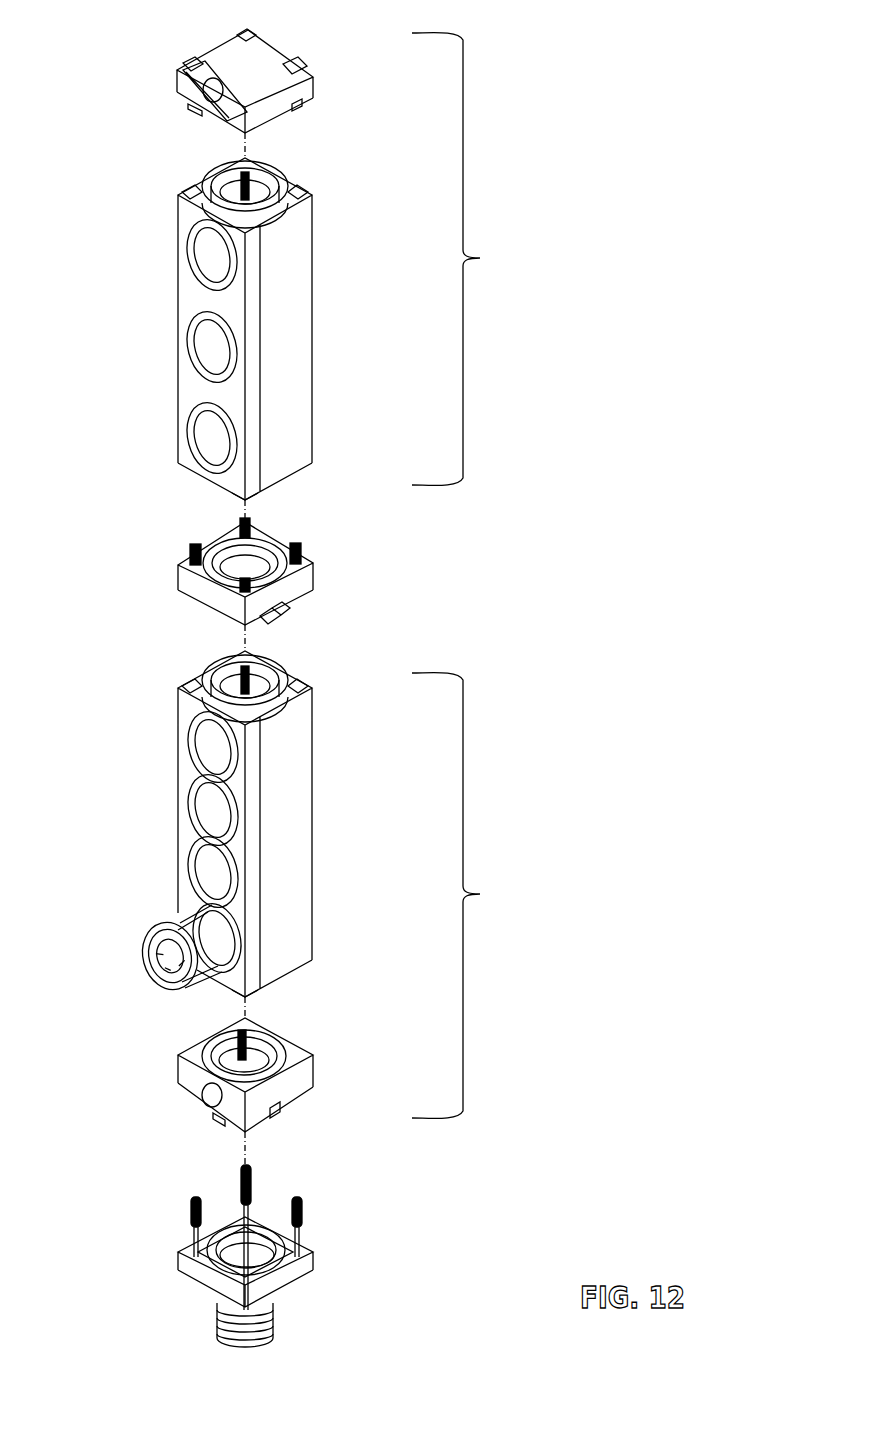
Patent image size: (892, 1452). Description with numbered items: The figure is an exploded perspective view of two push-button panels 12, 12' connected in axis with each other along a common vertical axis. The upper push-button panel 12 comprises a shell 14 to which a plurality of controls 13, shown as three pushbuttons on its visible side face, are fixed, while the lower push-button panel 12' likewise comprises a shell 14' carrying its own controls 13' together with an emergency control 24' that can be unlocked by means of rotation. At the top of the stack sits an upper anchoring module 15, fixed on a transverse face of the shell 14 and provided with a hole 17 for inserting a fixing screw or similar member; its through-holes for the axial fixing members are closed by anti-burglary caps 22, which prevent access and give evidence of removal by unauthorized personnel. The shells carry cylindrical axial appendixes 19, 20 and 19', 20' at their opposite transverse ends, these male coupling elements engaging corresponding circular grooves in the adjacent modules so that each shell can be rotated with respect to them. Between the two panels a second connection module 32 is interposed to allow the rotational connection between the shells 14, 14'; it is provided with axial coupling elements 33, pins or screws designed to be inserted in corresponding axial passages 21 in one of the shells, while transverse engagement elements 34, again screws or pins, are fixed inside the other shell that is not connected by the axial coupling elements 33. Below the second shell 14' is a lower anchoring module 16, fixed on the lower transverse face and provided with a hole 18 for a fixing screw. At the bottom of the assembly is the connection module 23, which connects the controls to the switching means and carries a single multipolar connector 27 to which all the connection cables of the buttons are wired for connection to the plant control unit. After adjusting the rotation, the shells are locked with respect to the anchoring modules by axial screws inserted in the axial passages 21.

The push-button panel 12 is at (483, 259).
The push-button panel 12' is at (489, 896).
The controls 13 is at (171, 346).
The controls 13' is at (167, 809).
The shell 14 is at (274, 329).
The shell 14' is at (286, 824).
The upper anchoring module 15 is at (307, 95).
The lower anchoring module 16 is at (186, 1065).
The hole 17 is at (203, 92).
The hole 18 is at (205, 1093).
The cylindrical axial appendix 19 is at (203, 194).
The cylindrical axial appendix 19' is at (218, 676).
The cylindrical axial appendix 20 is at (185, 480).
The cylindrical axial appendix 20' is at (298, 1005).
The axial passages 21 is at (188, 688).
The anti-burglary caps 22 is at (189, 64).
The connection module 23 is at (183, 1270).
The emergency control 24' is at (154, 947).
The multipolar connector 27 is at (232, 1338).
The second connection module 32 is at (178, 577).
The axial coupling elements 33 is at (302, 553).
The transverse engagement elements 34 is at (283, 612).